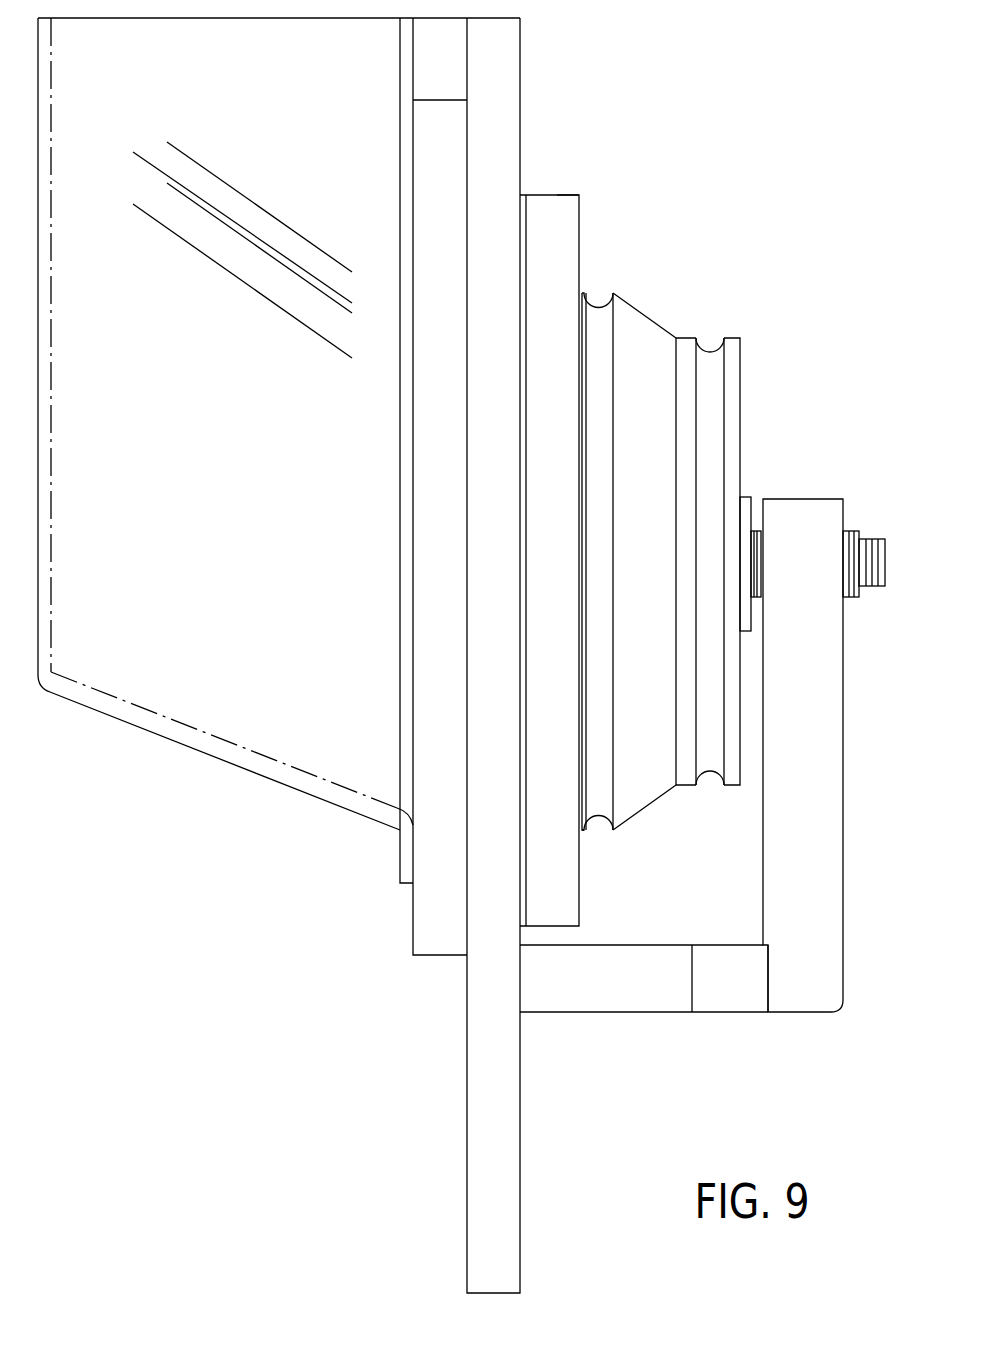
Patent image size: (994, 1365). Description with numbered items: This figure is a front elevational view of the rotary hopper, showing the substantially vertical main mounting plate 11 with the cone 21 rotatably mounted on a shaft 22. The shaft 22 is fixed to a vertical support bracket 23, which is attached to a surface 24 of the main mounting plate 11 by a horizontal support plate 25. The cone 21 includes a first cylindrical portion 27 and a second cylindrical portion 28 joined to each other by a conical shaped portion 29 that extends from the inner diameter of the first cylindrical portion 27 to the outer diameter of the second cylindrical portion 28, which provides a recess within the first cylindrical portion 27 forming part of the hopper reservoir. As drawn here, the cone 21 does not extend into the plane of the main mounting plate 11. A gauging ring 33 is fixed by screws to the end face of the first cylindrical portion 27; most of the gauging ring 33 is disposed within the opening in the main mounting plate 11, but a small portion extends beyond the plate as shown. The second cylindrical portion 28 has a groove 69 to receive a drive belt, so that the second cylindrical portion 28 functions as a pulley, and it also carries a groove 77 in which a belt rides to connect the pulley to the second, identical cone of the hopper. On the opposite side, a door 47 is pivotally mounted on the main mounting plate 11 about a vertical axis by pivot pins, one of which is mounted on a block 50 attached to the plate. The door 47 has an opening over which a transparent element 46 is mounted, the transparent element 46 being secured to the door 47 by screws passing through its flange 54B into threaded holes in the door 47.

The main mounting plate 11 is at (522, 1102).
The cone 21 is at (650, 805).
The shaft 22 is at (870, 539).
The vertical support bracket 23 is at (844, 667).
The surface 24 is at (522, 1152).
The horizontal support plate 25 is at (647, 1012).
The first cylindrical portion 27 is at (557, 195).
The second cylindrical portion 28 is at (740, 428).
The conical shaped portion 29 is at (645, 315).
The gauging ring 33 is at (526, 233).
The transparent element 46 is at (200, 750).
The door 47 is at (413, 917).
The block 50 is at (442, 100).
The flange 54B is at (397, 754).
The groove 69 is at (710, 357).
The groove 77 is at (597, 305).